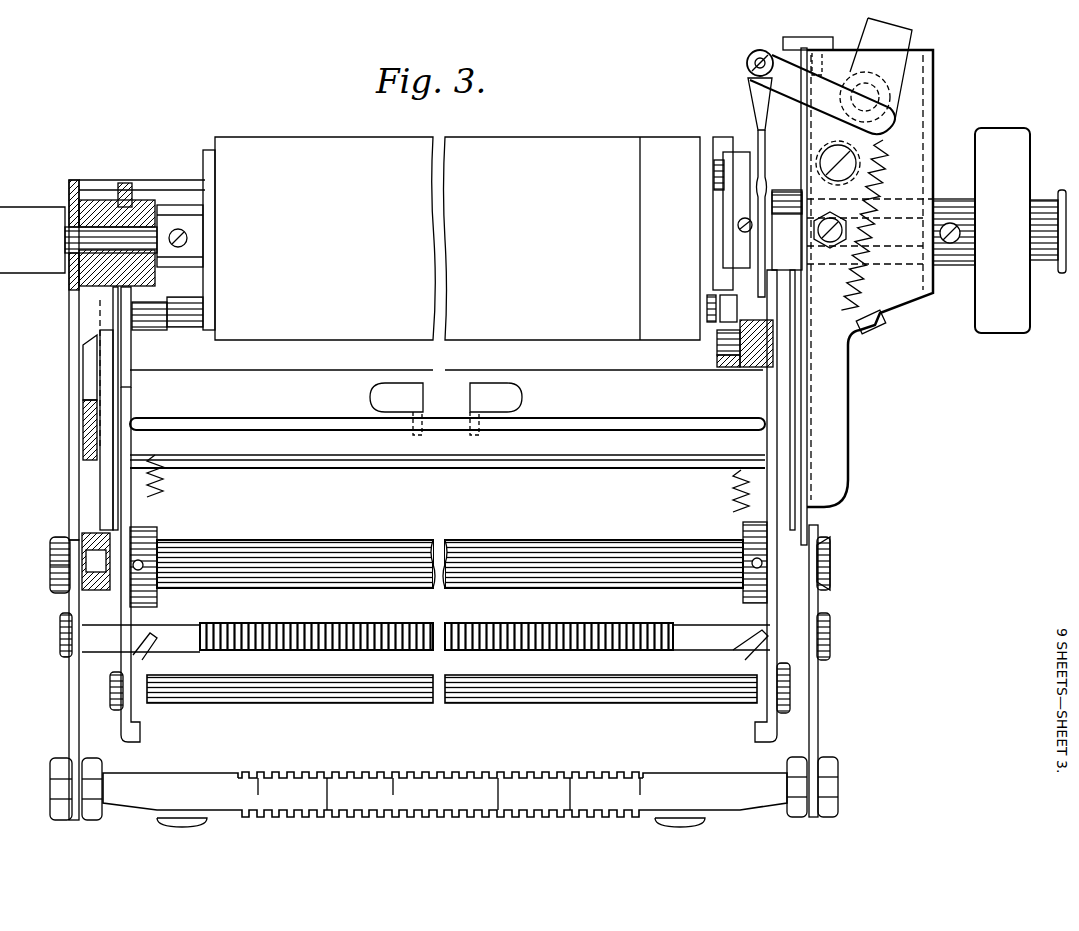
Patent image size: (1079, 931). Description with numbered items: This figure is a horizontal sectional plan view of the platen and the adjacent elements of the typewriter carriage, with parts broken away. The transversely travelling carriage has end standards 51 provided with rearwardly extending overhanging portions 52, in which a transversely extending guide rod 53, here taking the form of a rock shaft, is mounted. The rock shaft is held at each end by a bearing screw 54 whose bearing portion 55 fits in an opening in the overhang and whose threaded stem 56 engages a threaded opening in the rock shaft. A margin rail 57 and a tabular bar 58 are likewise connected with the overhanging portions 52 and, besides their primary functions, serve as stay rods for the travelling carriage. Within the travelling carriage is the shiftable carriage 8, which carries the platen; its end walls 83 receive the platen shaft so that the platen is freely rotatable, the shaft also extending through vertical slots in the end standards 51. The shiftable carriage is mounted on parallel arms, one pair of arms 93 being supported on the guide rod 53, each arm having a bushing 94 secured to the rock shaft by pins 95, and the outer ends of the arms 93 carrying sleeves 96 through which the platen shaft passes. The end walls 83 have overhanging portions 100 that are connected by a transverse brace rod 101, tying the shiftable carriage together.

The shiftable carriage 8 is at (133, 398).
The end standards 51 is at (73, 455).
The overhanging portions 52 is at (75, 730).
The guide rod 53 is at (462, 541).
The bearing screw 54 is at (62, 585).
The bearing portion 55 is at (60, 555).
The threaded stem 56 is at (88, 535).
The margin rail 57 is at (460, 623).
The tabular bar 58 is at (428, 778).
The end walls 83 is at (131, 360).
The arms 93 is at (105, 490).
The bushing 94 is at (154, 536).
The pins 95 is at (143, 565).
The sleeves 96 is at (110, 200).
The overhanging portions 100 is at (131, 613).
The brace rod 101 is at (452, 703).